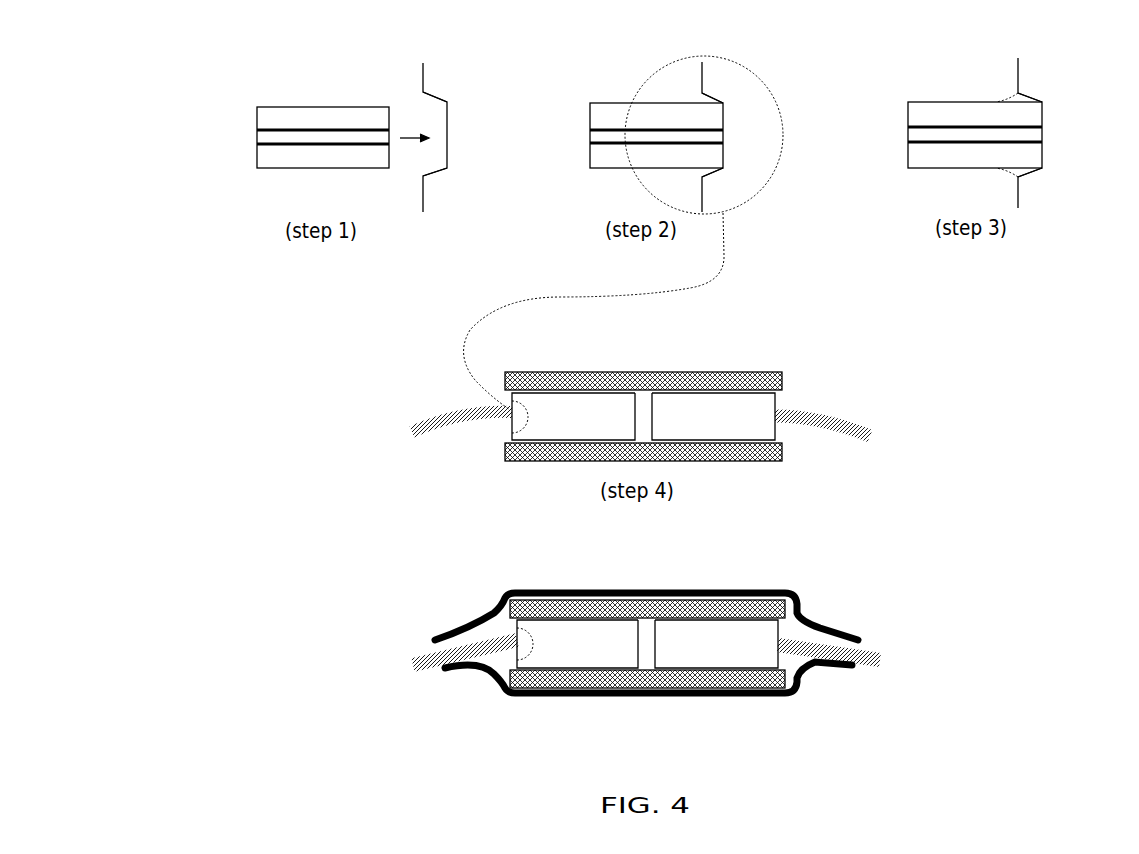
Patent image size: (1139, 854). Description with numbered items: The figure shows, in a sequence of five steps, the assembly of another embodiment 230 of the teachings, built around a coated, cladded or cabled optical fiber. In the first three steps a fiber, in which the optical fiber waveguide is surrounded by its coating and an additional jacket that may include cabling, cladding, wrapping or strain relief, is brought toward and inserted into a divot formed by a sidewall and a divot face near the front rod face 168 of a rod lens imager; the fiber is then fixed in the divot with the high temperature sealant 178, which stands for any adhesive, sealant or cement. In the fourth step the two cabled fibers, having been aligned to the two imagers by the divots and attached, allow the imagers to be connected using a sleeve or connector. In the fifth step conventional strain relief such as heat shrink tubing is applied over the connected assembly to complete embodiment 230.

The front rod face 168 is at (410, 173).
The high temperature sealant 178 is at (977, 151).
The embodiment 230 is at (353, 576).